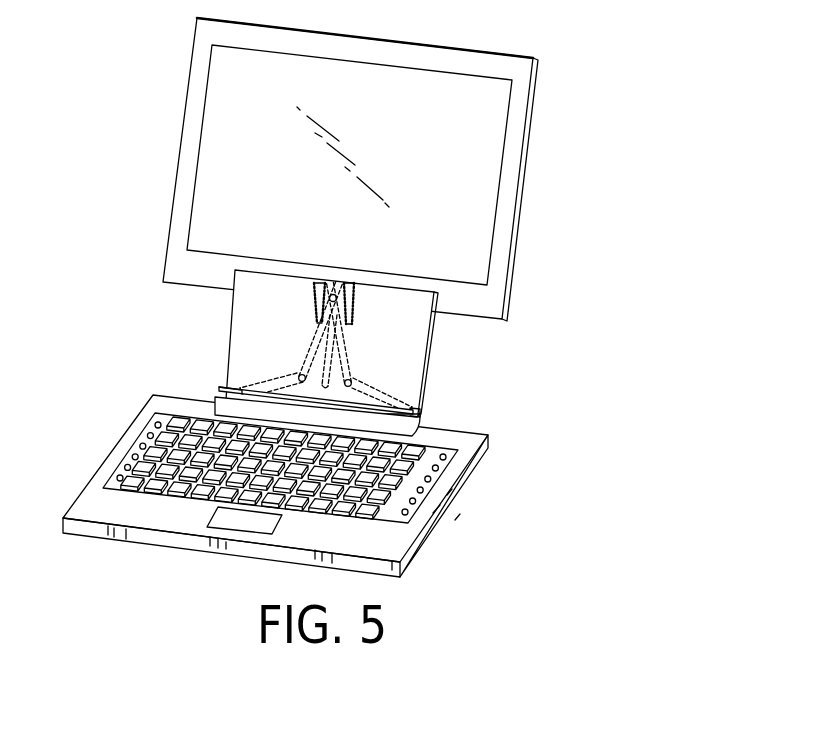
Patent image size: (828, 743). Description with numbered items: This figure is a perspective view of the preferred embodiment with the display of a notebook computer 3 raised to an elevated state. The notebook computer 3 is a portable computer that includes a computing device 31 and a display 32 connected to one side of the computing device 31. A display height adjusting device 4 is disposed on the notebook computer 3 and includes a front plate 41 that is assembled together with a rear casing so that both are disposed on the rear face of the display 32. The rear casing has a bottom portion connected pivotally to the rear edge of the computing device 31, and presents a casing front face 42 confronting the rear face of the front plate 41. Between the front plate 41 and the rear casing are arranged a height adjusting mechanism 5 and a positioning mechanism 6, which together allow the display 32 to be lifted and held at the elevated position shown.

The notebook computer 3 is at (585, 212).
The computing device 31 is at (453, 493).
The display 32 is at (535, 78).
The display height adjusting device 4 is at (352, 353).
The front plate 41 is at (252, 312).
The casing front face 42 is at (428, 370).
The height adjusting mechanism 5 is at (278, 352).
The positioning mechanism 6 is at (366, 303).